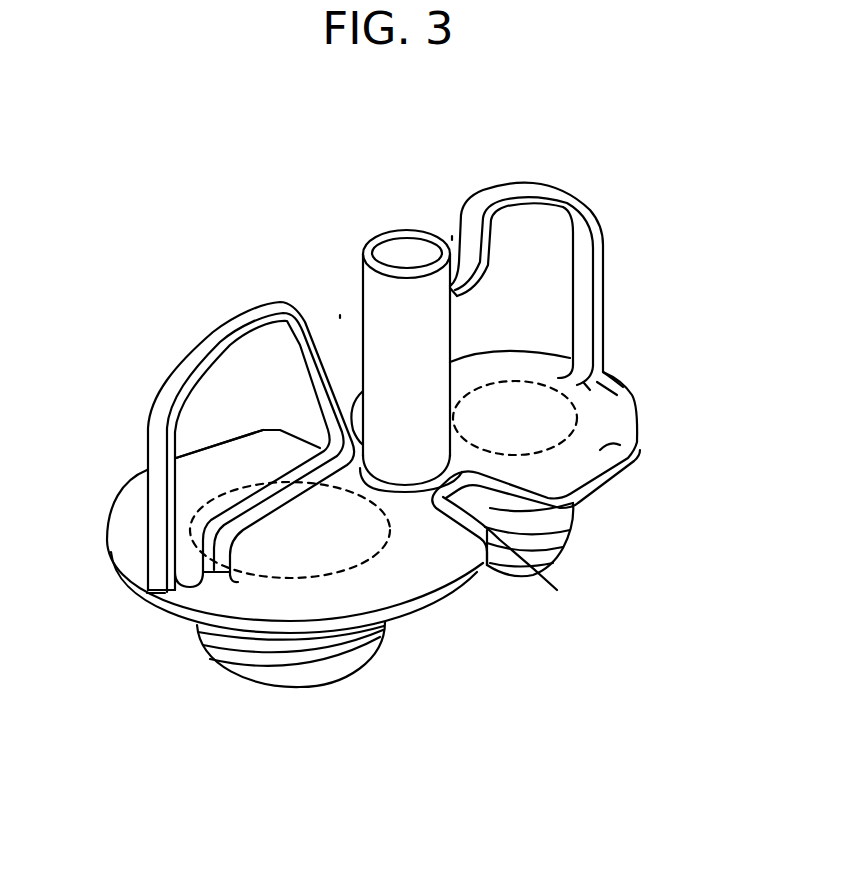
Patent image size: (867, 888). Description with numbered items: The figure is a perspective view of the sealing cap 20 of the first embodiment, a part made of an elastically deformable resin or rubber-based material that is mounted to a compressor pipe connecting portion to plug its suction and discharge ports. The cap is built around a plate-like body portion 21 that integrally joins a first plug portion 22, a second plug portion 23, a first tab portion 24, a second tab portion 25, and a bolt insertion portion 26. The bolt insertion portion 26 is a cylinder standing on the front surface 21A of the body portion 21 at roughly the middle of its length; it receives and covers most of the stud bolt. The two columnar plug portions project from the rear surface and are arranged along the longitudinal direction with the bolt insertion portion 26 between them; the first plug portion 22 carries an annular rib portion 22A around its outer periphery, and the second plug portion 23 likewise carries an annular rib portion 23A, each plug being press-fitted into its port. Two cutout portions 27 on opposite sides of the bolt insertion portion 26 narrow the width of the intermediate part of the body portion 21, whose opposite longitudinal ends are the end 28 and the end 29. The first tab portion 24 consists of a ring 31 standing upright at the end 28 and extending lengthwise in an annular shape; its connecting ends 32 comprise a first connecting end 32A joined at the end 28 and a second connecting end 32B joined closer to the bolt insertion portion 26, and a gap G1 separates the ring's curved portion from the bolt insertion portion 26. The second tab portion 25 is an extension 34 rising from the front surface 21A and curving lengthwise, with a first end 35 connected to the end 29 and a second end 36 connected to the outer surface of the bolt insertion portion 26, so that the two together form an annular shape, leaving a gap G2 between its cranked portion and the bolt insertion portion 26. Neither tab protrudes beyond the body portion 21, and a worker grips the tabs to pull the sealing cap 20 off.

The sealing cap 20 is at (206, 225).
The plate-like body portion 21 is at (443, 594).
The front surface 21A is at (594, 457).
The first plug portion 22 is at (372, 657).
The annular rib portion 22A is at (303, 652).
The second plug portion 23 is at (570, 537).
The annular rib portion 23A is at (575, 507).
The first tab portion 24 is at (168, 373).
The second tab portion 25 is at (550, 186).
The bolt insertion portion 26 is at (372, 283).
The cutout portions 27 is at (312, 440).
The end 28 is at (153, 595).
The end 29 is at (605, 373).
The ring 31 is at (207, 348).
The connecting ends 32 is at (262, 728).
The first connecting end 32A is at (178, 592).
The second connecting end 32B is at (228, 565).
The extension 34 is at (492, 195).
The first end 35 is at (608, 378).
The second end 36 is at (460, 292).
The gap G1 is at (336, 312).
The gap G2 is at (452, 233).